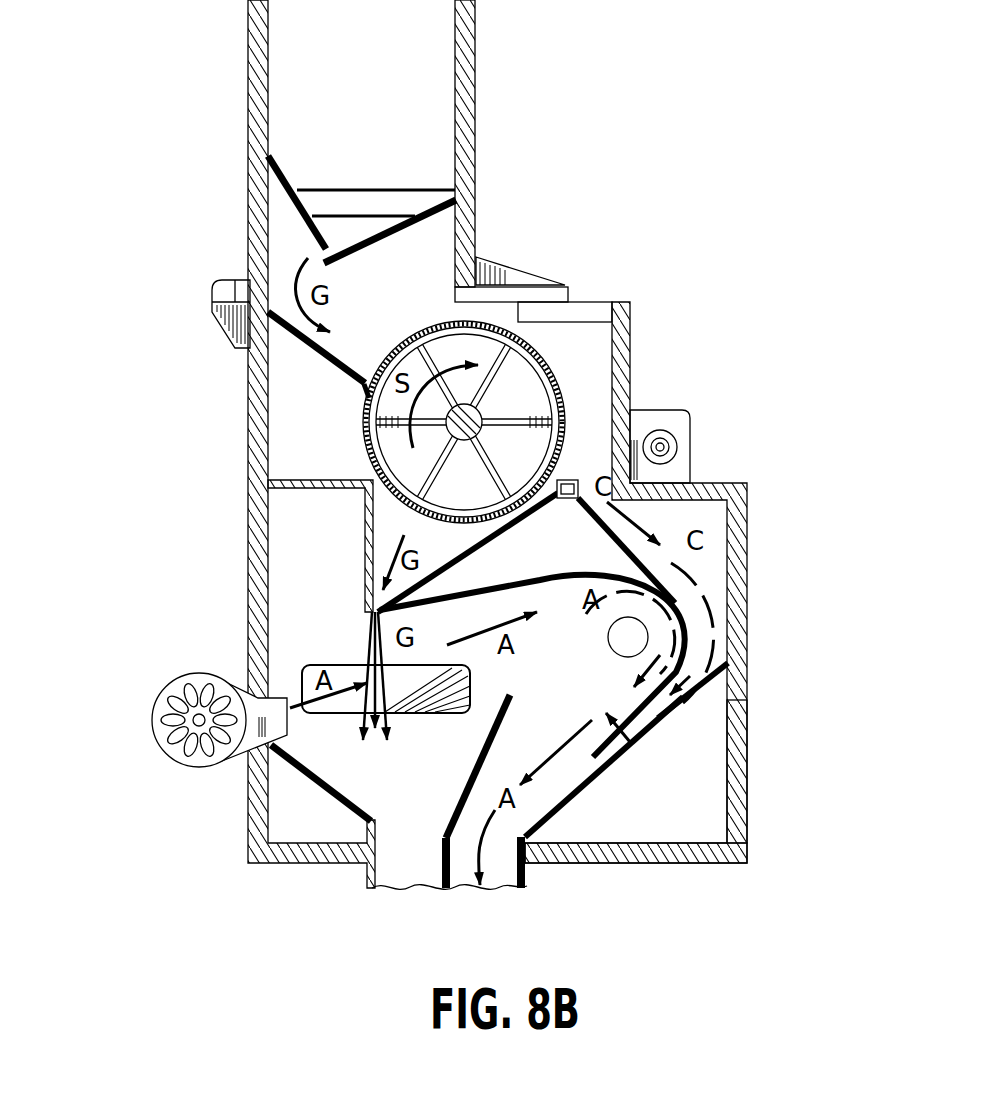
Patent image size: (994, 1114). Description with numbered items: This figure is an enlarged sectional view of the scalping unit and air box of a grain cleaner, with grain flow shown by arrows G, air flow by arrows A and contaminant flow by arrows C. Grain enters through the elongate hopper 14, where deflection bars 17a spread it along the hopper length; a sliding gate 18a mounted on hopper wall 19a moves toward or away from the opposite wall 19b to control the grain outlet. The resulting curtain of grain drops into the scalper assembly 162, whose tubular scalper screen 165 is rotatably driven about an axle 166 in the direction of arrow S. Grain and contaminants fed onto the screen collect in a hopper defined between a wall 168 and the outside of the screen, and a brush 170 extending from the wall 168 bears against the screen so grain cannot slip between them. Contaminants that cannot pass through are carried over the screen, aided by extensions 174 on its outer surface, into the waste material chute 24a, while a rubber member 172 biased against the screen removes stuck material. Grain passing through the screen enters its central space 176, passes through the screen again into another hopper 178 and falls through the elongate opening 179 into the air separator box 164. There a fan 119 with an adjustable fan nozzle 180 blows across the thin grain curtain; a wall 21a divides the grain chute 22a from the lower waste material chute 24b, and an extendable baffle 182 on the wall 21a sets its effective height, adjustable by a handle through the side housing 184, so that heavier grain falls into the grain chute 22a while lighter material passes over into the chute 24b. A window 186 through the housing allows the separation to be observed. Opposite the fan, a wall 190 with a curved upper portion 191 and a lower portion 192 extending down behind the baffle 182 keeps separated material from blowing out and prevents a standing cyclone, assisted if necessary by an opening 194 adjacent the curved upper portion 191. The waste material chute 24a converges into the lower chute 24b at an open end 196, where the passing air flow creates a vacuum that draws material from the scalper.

The hopper 14 is at (438, 77).
The deflection bars 17a is at (362, 192).
The gate 18a is at (305, 215).
The hopper wall 19a is at (285, 178).
The opposite wall 19b is at (405, 235).
The grain chute 22a is at (397, 835).
The scalper assembly 162 is at (552, 338).
The waste material chute 24a is at (635, 400).
The air separator box 164 is at (742, 768).
The lower waste material chute 24b is at (505, 823).
The rubber member 172 is at (665, 450).
The axle 166 is at (585, 415).
The extensions 174 is at (548, 368).
The central space 176 is at (400, 467).
The scalper screen 165 is at (375, 405).
The wall 168 is at (300, 338).
The brush 170 is at (365, 388).
The hopper 178 is at (373, 520).
The elongate opening 179 is at (373, 605).
The side housing 184 is at (612, 667).
The wall 190 is at (568, 577).
The opening 194 is at (648, 637).
The curved upper portion 191 is at (678, 598).
The lower portion 192 is at (658, 727).
The open end 196 is at (592, 772).
The extendable baffle 182 is at (512, 727).
The wall 21a is at (432, 878).
The window 186 is at (442, 710).
The fan nozzle 180 is at (266, 700).
The fan 119 is at (152, 720).